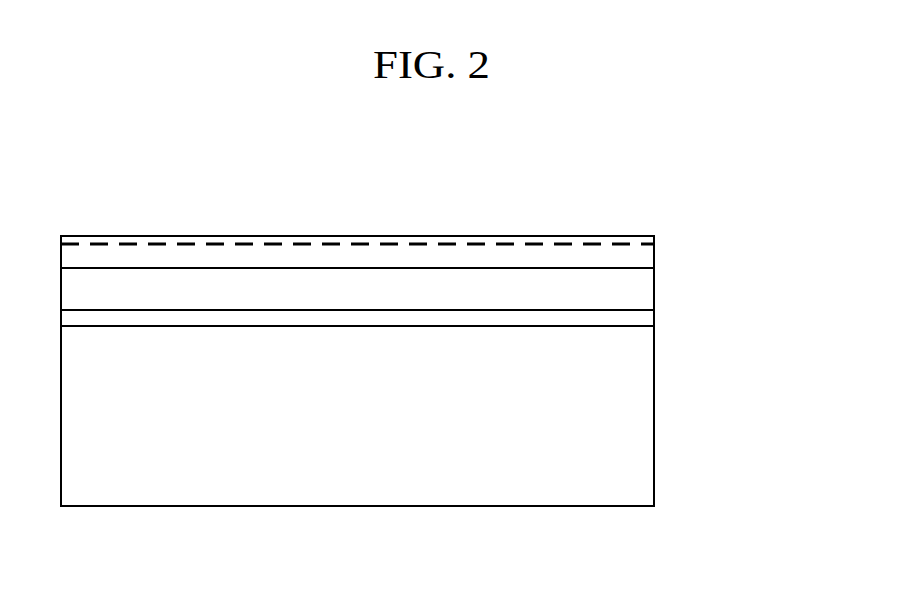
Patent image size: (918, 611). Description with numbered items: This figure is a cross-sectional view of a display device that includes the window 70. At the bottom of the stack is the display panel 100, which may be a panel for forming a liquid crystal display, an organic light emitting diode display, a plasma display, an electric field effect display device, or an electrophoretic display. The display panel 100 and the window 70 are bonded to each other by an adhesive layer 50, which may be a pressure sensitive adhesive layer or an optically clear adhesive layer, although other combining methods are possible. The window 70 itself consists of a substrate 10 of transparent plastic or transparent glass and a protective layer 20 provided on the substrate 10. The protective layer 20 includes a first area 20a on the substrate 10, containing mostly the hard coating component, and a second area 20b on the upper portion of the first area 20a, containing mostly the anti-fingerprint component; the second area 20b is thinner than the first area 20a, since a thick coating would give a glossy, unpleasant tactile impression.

The display panel 100 is at (643, 418).
The adhesive layer 50 is at (643, 318).
The substrate 10 is at (645, 289).
The protective layer 20 is at (413, 243).
The first area 20a is at (643, 258).
The second area 20b is at (643, 238).
The window 70 is at (768, 232).